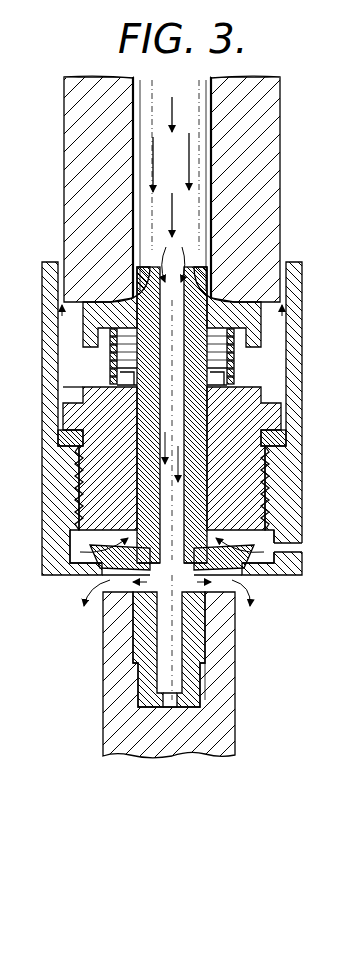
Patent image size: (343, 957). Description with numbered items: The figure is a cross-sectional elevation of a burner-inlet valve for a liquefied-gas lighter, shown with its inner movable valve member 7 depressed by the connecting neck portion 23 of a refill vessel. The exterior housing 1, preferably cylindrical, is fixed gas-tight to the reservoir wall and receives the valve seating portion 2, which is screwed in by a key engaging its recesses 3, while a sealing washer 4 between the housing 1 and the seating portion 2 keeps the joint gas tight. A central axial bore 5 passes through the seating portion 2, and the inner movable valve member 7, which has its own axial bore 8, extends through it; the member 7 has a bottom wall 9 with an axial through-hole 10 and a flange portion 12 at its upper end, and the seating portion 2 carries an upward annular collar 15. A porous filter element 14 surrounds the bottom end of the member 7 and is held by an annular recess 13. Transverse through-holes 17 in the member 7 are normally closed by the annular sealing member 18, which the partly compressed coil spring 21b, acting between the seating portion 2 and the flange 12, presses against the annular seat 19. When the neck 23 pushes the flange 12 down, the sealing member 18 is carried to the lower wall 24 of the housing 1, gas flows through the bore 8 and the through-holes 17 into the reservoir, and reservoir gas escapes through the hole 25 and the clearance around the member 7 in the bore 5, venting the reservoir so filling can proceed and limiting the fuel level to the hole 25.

The exterior housing 1 is at (50, 327).
The valve seating portion 2 is at (281, 420).
The recesses 3 is at (70, 388).
The sealing washer 4 is at (283, 441).
The central axial bore 5 is at (118, 376).
The inner movable valve member 7 is at (130, 458).
The axial bore 8 is at (205, 400).
The bottom wall 9 is at (232, 691).
The axial through-hole 10 is at (160, 708).
The flange portion 12 is at (207, 280).
The annular recess 13 is at (203, 663).
The filter element 14 is at (106, 688).
The annular collar 15 is at (106, 354).
The through-holes 17 is at (160, 578).
The annular sealing member 18 is at (90, 548).
The annular seat 19 is at (268, 570).
The coil spring 21b is at (236, 373).
The connecting neck portion 23 is at (283, 121).
The lower wall 24 is at (83, 578).
The hole 25 is at (300, 548).